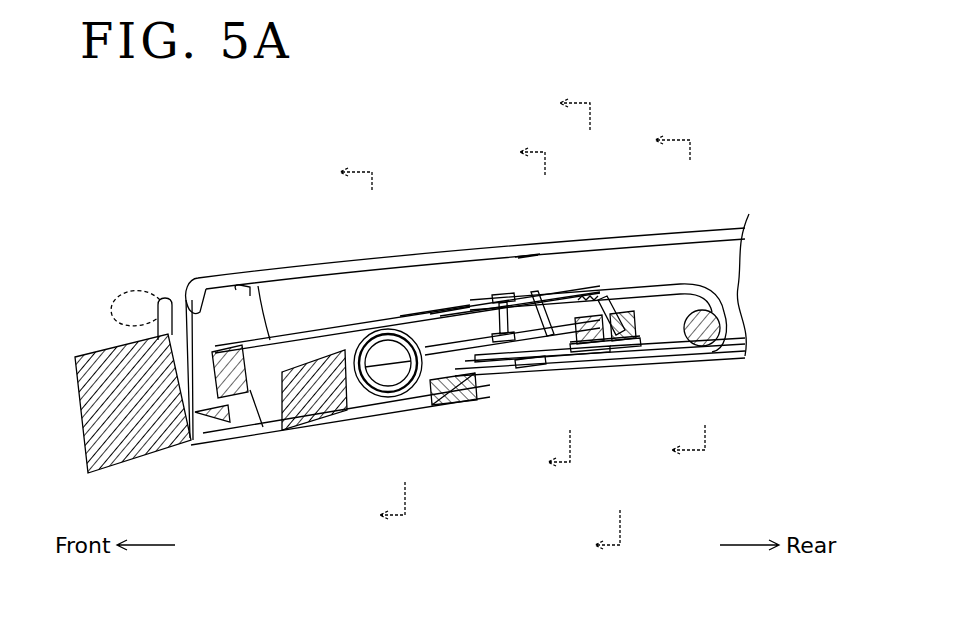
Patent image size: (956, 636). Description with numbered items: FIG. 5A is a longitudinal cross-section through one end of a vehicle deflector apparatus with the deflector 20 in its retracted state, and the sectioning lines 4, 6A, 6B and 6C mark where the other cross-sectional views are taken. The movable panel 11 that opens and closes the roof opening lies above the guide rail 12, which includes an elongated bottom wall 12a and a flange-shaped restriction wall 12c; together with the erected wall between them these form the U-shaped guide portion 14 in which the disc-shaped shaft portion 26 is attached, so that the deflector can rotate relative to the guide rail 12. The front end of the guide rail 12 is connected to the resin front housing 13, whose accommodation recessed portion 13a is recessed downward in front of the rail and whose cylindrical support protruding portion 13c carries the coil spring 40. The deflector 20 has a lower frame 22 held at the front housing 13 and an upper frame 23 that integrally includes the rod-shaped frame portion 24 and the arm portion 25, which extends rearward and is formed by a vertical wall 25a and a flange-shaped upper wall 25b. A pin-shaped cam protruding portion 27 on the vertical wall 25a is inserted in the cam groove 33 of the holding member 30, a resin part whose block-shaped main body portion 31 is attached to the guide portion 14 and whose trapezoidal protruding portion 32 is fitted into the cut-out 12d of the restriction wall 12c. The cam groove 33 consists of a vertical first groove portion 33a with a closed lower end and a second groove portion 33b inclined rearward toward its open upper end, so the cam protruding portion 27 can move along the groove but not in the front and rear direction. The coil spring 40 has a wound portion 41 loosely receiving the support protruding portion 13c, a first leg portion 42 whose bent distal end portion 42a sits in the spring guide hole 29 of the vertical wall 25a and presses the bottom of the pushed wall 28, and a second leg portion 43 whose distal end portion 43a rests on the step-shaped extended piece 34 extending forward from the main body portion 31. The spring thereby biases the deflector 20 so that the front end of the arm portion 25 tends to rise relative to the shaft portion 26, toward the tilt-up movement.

The section line 4 is at (667, 297).
The section line 6A is at (570, 328).
The section line 6B is at (525, 310).
The section line 6C is at (352, 345).
The movable panel 11 is at (668, 229).
The guide rail 12 is at (708, 362).
The bottom wall 12a is at (738, 363).
The restriction wall 12c is at (742, 292).
The cut-out 12d is at (654, 287).
The front housing 13 is at (241, 449).
The accommodation recessed portion 13a is at (380, 408).
The support protruding portion 13c is at (437, 406).
The guide portion 14 is at (735, 300).
The deflector 20 is at (442, 294).
The lower frame 22 is at (200, 447).
The upper frame 23 is at (226, 345).
The frame portion 24 is at (76, 405).
The arm portion 25 is at (290, 338).
The vertical wall 25a is at (283, 432).
The upper wall 25b is at (243, 288).
The shaft portion 26 is at (735, 330).
The cam protruding portion 27 is at (587, 300).
The pushed wall 28 is at (470, 303).
The spring guide hole 29 is at (501, 296).
The holding member 30 is at (545, 296).
The main body portion 31 is at (641, 327).
The protruding portion 32 is at (595, 310).
The cam groove 33 is at (588, 403).
The first groove portion 33a is at (598, 344).
The second groove portion 33b is at (637, 348).
The extended piece 34 is at (530, 365).
The coil spring 40 is at (433, 309).
The wound portion 41 is at (365, 398).
The first leg portion 42 is at (528, 256).
The distal end portion 42a is at (527, 251).
The second leg portion 43 is at (467, 339).
The distal end portion 43a is at (547, 362).